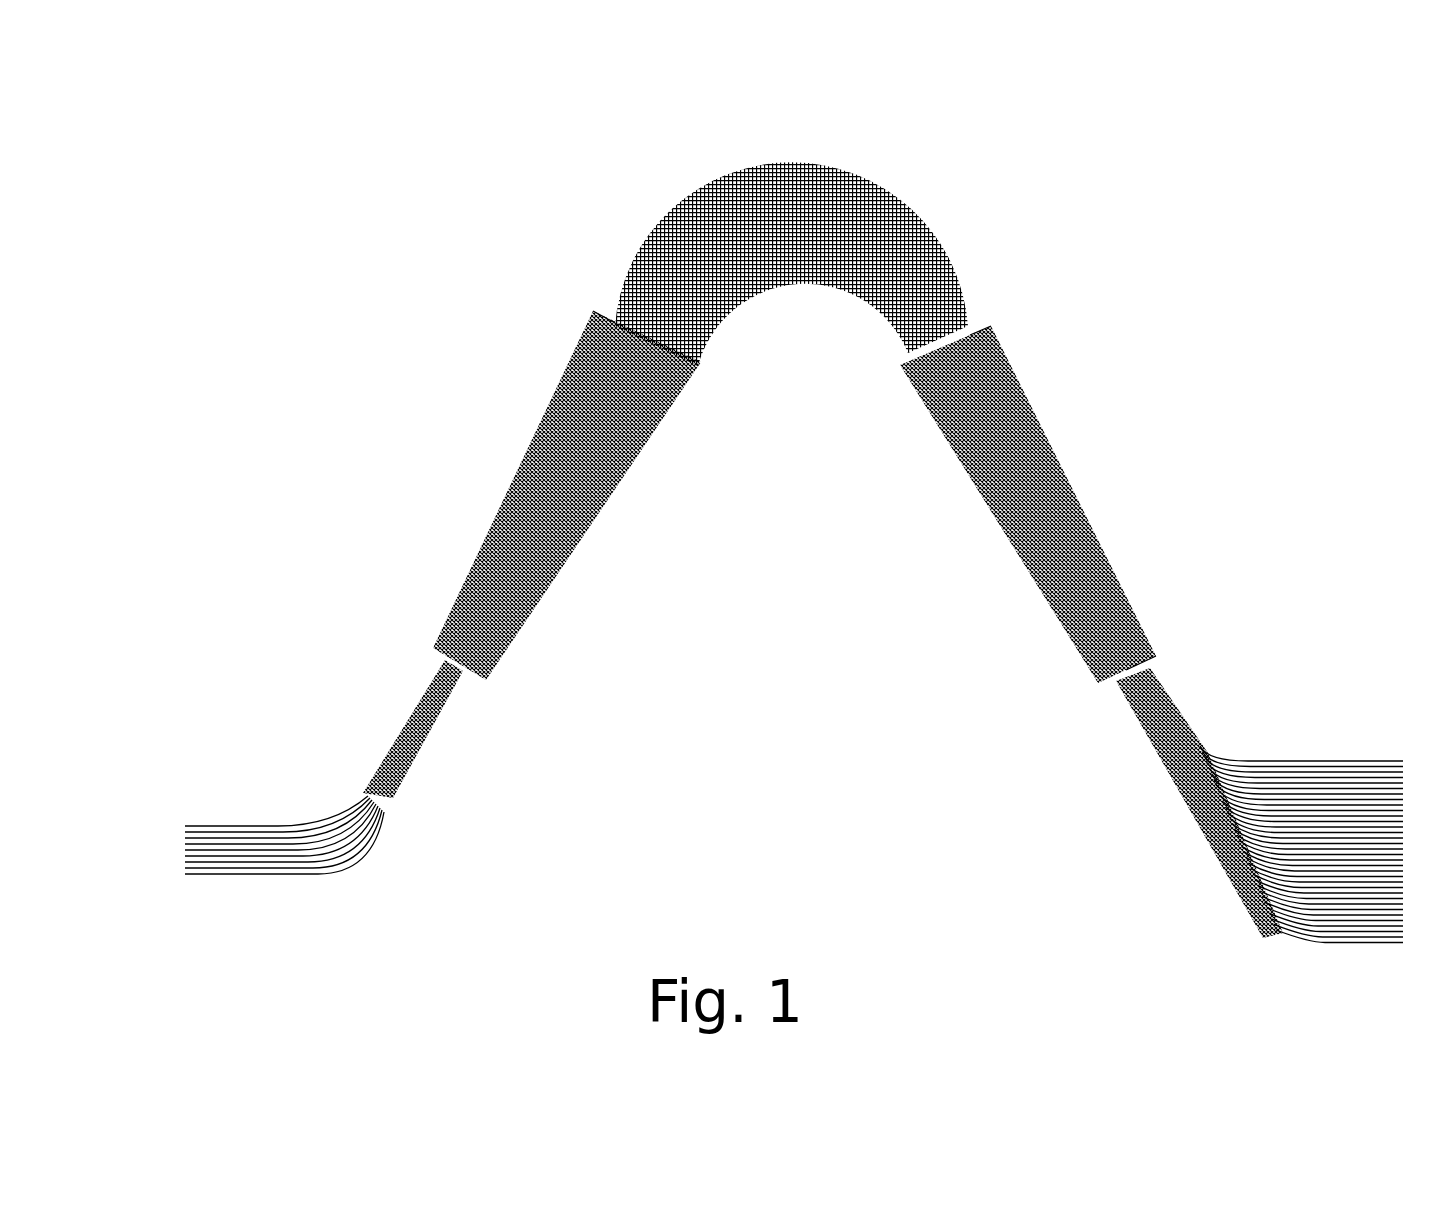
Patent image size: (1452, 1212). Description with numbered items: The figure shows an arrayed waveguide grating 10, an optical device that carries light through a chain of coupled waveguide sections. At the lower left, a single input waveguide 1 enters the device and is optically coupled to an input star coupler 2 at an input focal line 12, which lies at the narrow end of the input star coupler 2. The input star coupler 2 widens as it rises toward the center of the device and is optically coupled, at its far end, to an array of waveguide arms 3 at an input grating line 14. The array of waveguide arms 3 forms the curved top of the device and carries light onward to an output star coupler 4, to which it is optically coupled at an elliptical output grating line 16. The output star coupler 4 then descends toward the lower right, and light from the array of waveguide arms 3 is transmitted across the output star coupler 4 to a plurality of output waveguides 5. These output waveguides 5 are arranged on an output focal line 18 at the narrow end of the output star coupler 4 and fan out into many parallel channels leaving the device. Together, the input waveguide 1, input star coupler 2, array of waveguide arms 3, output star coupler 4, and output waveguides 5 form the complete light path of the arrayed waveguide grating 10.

The arrayed waveguide grating 10 is at (1060, 187).
The input waveguide 1 is at (281, 822).
The input star coupler 2 is at (510, 480).
The array of waveguide arms 3 is at (800, 273).
The output star coupler 4 is at (1057, 478).
The output waveguides 5 is at (1338, 763).
The input focal line 12 is at (432, 648).
The input grating line 14 is at (595, 300).
The elliptical output grating line 16 is at (966, 318).
The output focal line 18 is at (1145, 650).